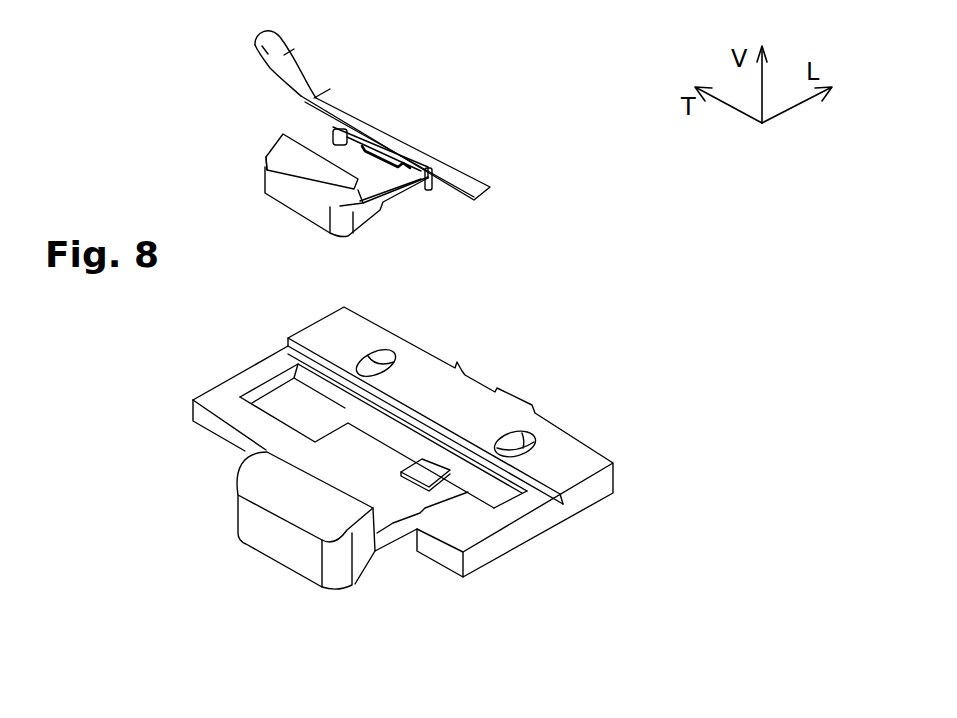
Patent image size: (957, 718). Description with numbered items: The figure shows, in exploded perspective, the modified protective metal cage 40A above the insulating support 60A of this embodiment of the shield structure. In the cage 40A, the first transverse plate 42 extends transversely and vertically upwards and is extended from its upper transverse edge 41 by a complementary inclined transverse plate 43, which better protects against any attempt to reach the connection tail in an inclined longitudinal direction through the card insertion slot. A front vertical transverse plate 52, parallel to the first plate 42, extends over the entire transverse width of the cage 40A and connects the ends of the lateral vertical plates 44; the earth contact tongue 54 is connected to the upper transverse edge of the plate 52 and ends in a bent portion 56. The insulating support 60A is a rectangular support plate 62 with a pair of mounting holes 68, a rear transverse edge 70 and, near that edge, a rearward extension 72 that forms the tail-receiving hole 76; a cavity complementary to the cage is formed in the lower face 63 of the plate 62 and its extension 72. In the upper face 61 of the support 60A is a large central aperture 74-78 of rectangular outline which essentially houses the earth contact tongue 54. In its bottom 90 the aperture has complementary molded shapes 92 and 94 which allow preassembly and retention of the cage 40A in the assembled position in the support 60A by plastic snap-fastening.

The protective metal cage 40A is at (347, 133).
The upper transverse edge 41 is at (314, 190).
The first transverse plate 42 is at (305, 207).
The complementary inclined transverse plate 43 is at (280, 150).
The lateral vertical plates 44 is at (323, 143).
The front vertical transverse plate 52 is at (407, 167).
The earth contact tongue 54 is at (372, 106).
The bent end 56 is at (278, 51).
The insulating support 60A is at (403, 457).
The upper face 61 is at (280, 360).
The support plate 62 is at (613, 480).
The lower face 63 is at (443, 571).
The mounting holes 68 is at (390, 366).
The rear transverse edge 70 is at (213, 435).
The rearward extension 72 is at (384, 560).
The central aperture 74-78 is at (430, 478).
The tail-receiving hole 76 is at (358, 494).
The bottom 90 is at (323, 415).
The molded shape 92 is at (400, 446).
The molded shape 94 is at (383, 497).